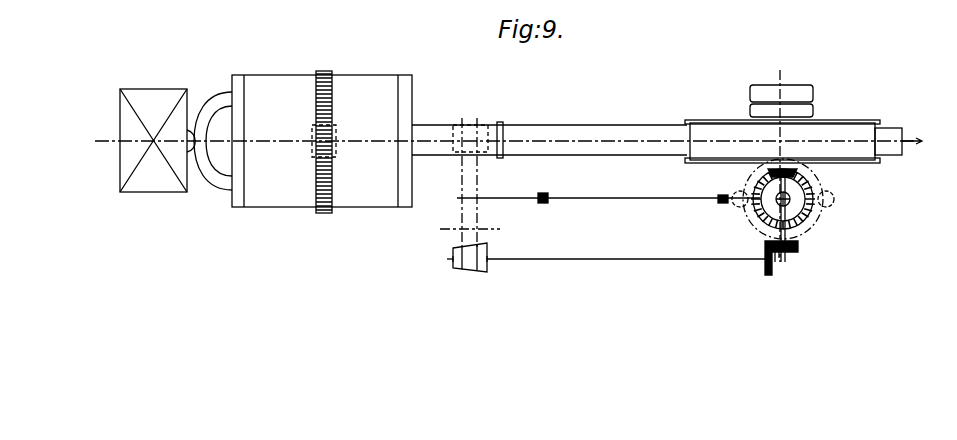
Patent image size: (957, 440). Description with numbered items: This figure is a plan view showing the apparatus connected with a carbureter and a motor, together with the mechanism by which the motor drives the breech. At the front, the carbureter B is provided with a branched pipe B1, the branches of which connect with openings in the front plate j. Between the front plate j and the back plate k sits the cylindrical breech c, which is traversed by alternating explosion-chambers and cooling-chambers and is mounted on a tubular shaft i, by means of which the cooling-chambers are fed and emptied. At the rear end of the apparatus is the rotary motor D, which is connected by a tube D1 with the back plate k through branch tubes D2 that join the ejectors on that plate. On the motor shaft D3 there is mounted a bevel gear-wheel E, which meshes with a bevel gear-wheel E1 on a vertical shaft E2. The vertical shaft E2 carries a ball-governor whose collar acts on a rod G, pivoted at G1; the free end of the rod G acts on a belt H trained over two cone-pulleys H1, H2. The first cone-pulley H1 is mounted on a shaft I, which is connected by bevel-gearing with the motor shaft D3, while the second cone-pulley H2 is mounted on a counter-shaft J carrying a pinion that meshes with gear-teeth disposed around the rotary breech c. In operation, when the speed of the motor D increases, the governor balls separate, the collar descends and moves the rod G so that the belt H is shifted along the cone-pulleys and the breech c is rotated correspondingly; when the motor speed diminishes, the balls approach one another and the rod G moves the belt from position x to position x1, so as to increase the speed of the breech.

The carbureter B is at (118, 120).
The branched pipe B1 is at (186, 91).
The cylindrical breech c is at (322, 141).
The front plate j is at (244, 79).
The back plate k is at (398, 80).
The counter-shaft J is at (350, 132).
The branch tubes D2 is at (414, 124).
The belt H is at (461, 186).
The cone-pulley H2 is at (499, 121).
The tube D1 is at (595, 124).
The rotary motor D is at (722, 120).
The rod G is at (608, 210).
The pivot G1 is at (720, 200).
The bevel gear-wheel E is at (752, 190).
The vertical shaft E2 is at (790, 196).
The bevel gear-wheel E1 is at (778, 204).
The motor shaft D3 is at (799, 246).
The tubular shaft i is at (785, 265).
The shaft I is at (626, 243).
The cone-pulley H1 is at (471, 268).
The belt position x is at (455, 263).
The belt position x1 is at (488, 264).